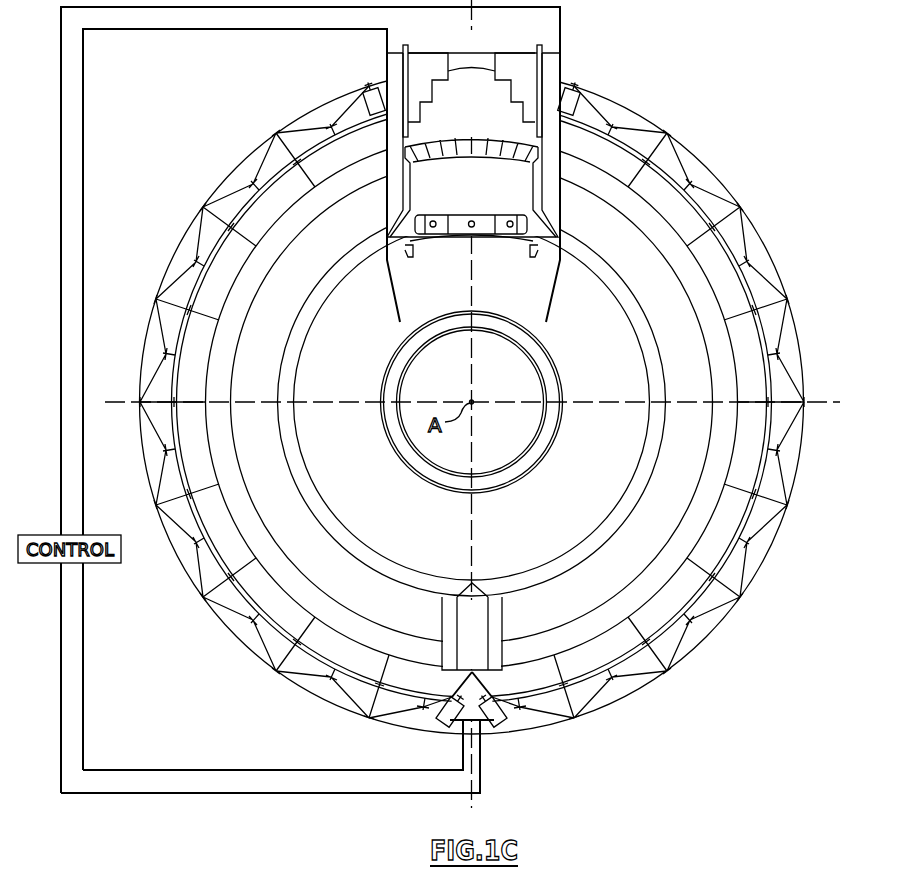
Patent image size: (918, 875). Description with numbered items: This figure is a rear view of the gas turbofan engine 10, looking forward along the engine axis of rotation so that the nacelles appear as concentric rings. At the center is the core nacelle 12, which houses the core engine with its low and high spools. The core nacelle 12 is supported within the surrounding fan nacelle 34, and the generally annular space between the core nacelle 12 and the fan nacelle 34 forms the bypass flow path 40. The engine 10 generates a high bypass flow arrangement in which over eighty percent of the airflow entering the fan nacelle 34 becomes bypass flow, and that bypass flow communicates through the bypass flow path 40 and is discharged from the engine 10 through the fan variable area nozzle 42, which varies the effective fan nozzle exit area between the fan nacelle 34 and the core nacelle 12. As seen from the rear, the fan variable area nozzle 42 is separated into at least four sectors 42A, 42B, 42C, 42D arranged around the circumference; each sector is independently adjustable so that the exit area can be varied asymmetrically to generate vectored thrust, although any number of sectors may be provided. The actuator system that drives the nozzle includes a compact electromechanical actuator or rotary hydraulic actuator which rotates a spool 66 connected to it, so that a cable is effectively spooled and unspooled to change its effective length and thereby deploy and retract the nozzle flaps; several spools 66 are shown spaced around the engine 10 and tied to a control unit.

The gas turbofan engine 10 is at (681, 72).
The core nacelle 12 is at (391, 493).
The fan nacelle 34 is at (740, 206).
The bypass flow path 40 is at (701, 383).
The fan variable area nozzle 42 is at (756, 376).
The sector 42A is at (150, 170).
The sector 42B is at (150, 690).
The sector 42C is at (790, 690).
The sector 42D is at (689, 246).
The spool 66 is at (368, 86).